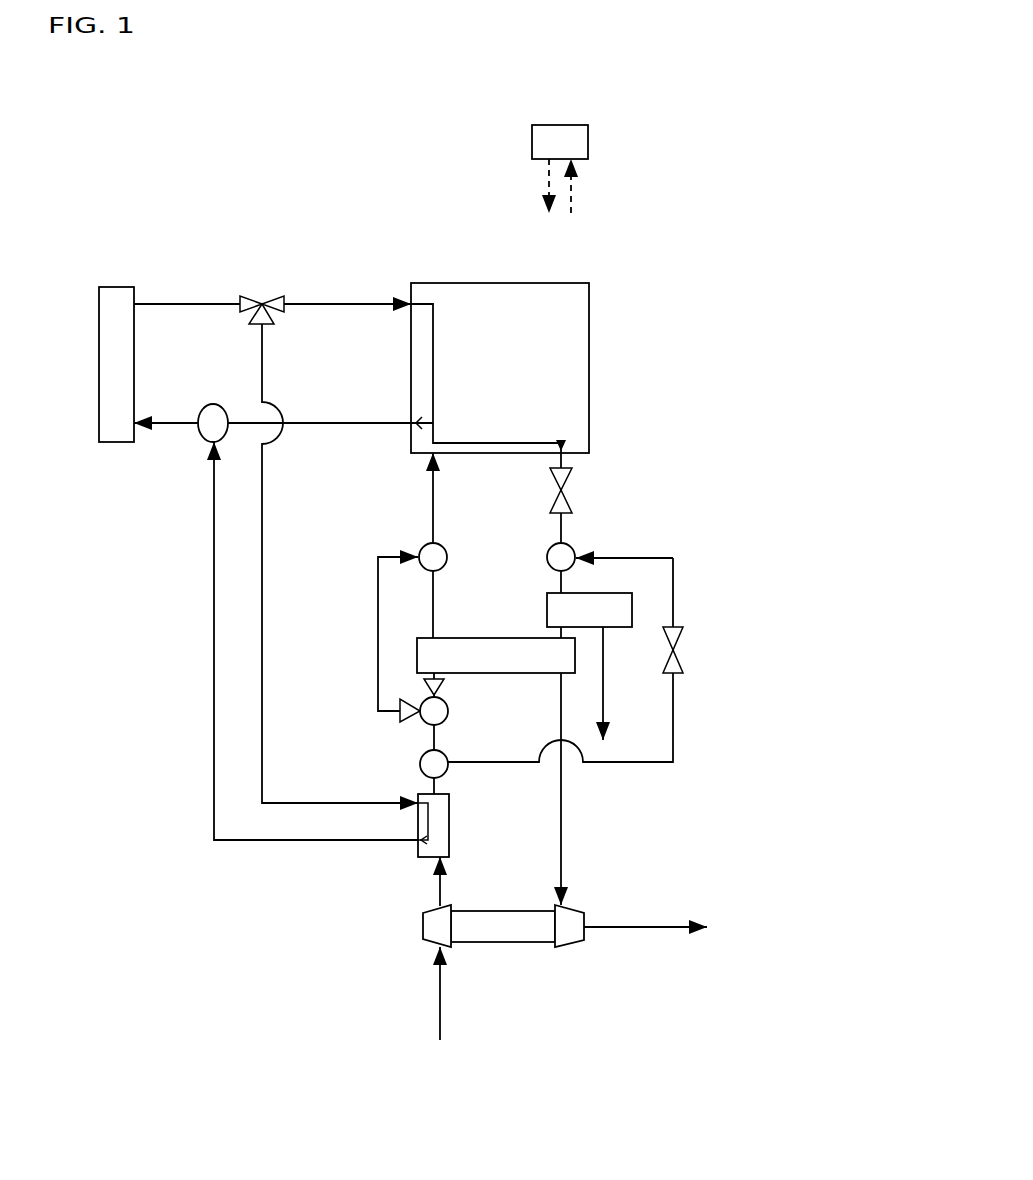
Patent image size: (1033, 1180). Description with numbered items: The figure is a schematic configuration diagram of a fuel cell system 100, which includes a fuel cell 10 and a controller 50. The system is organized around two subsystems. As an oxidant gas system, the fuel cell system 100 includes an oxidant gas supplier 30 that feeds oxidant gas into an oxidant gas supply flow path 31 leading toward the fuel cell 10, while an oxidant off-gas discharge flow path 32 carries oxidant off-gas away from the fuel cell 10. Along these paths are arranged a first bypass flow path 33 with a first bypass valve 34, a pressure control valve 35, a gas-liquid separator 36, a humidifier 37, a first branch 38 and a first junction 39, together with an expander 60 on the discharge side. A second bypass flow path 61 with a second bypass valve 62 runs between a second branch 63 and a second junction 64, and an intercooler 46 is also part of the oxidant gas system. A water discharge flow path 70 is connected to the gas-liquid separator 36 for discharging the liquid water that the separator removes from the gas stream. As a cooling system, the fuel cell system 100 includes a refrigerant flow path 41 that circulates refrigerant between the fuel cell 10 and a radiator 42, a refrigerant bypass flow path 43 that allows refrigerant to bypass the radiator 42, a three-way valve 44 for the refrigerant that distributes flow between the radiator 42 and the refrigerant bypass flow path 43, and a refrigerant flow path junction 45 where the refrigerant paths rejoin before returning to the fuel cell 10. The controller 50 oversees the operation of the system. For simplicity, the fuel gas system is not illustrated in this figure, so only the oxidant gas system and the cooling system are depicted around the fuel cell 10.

The fuel cell system 100 is at (648, 114).
The fuel cell 10 is at (477, 282).
The oxidant gas supplier 30 is at (448, 948).
The oxidant gas supply flow path 31 is at (438, 987).
The oxidant off-gas discharge flow path 32 is at (562, 860).
The first bypass flow path 33 is at (657, 763).
The first bypass valve 34 is at (683, 672).
The pressure control valve 35 is at (573, 512).
The gas-liquid separator 36 is at (627, 627).
The humidifier 37 is at (497, 638).
The first branch 38 is at (420, 765).
The first junction 39 is at (575, 545).
The refrigerant flow path 41 is at (200, 303).
The radiator 42 is at (105, 357).
The refrigerant bypass flow path 43 is at (214, 555).
The three-way valve 44 is at (240, 297).
The refrigerant flow path junction 45 is at (207, 408).
The intercooler 46 is at (450, 820).
The controller 50 is at (532, 143).
The expander 60 is at (578, 943).
The second bypass flow path 61 is at (378, 678).
The second bypass valve 62 is at (402, 717).
The second branch 63 is at (448, 708).
The second junction 64 is at (448, 545).
The water discharge flow path 70 is at (603, 700).